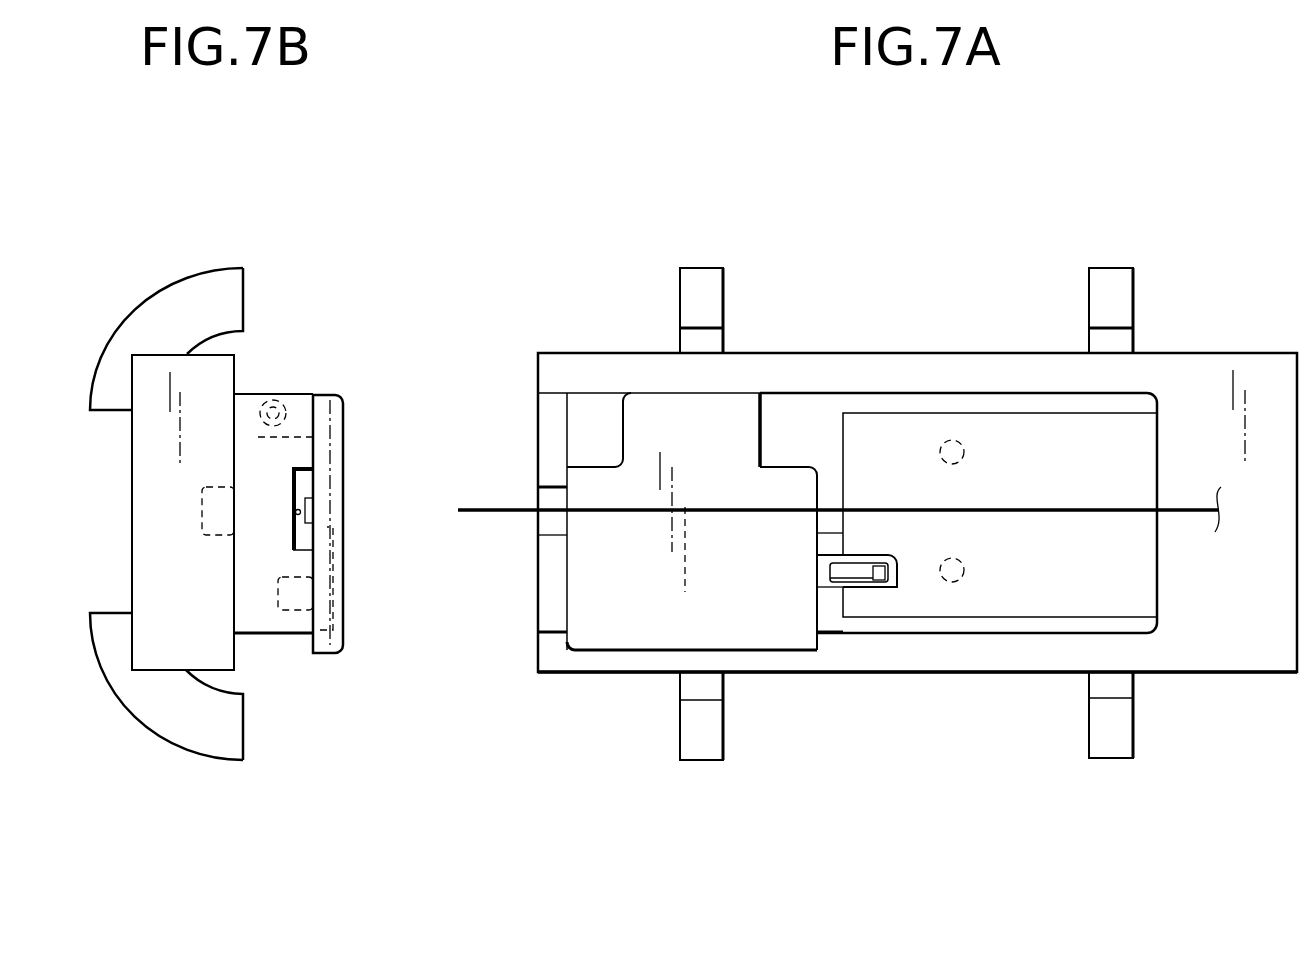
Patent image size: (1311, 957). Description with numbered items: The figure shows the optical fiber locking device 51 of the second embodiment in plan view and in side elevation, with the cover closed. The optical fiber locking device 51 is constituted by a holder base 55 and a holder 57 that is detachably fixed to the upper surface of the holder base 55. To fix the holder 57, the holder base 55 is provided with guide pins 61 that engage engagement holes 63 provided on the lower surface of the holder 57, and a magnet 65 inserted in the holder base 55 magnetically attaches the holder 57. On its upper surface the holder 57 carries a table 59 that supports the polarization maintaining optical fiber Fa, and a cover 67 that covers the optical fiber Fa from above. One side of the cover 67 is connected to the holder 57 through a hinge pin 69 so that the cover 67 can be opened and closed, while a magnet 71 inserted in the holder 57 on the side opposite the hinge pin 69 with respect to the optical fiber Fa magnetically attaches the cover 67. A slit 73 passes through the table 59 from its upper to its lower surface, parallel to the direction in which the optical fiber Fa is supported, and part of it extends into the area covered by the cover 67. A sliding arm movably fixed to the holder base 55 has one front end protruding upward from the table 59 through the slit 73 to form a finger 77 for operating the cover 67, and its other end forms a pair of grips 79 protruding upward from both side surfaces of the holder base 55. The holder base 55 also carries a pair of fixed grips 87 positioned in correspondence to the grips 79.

In FIG. 7B, the optical fiber locking device 51 is at (347, 230).
In FIG. 7A, the optical fiber locking device 51 is at (985, 218).
In FIG. 7B, the holder base 55 is at (132, 443).
In FIG. 7A, the holder base 55 is at (1030, 655).
In FIG. 7B, the holder 57 is at (257, 635).
In FIG. 7A, the holder 57 is at (860, 392).
In FIG. 7B, the table 59 is at (309, 481).
In FIG. 7A, the table 59 is at (1063, 508).
In FIG. 7A, the guide pins 61 is at (950, 440).
In FIG. 7A, the engagement holes 63 is at (964, 452).
In FIG. 7B, the magnet 65 is at (202, 510).
In FIG. 7B, the cover 67 is at (343, 606).
In FIG. 7A, the cover 67 is at (597, 640).
In FIG. 7B, the hinge pin 69 is at (283, 400).
In FIG. 7B, the magnet 71 is at (293, 635).
In FIG. 7A, the slit 73 is at (900, 577).
In FIG. 7A, the finger 77 is at (858, 578).
In FIG. 7A, the grips 79 is at (1115, 265).
In FIG. 7B, the fixed grips 87 is at (160, 298).
In FIG. 7A, the fixed grips 87 is at (700, 265).
In FIG. 7B, the polarization maintaining optical fiber Fa is at (307, 507).
In FIG. 7A, the polarization maintaining optical fiber Fa is at (497, 508).